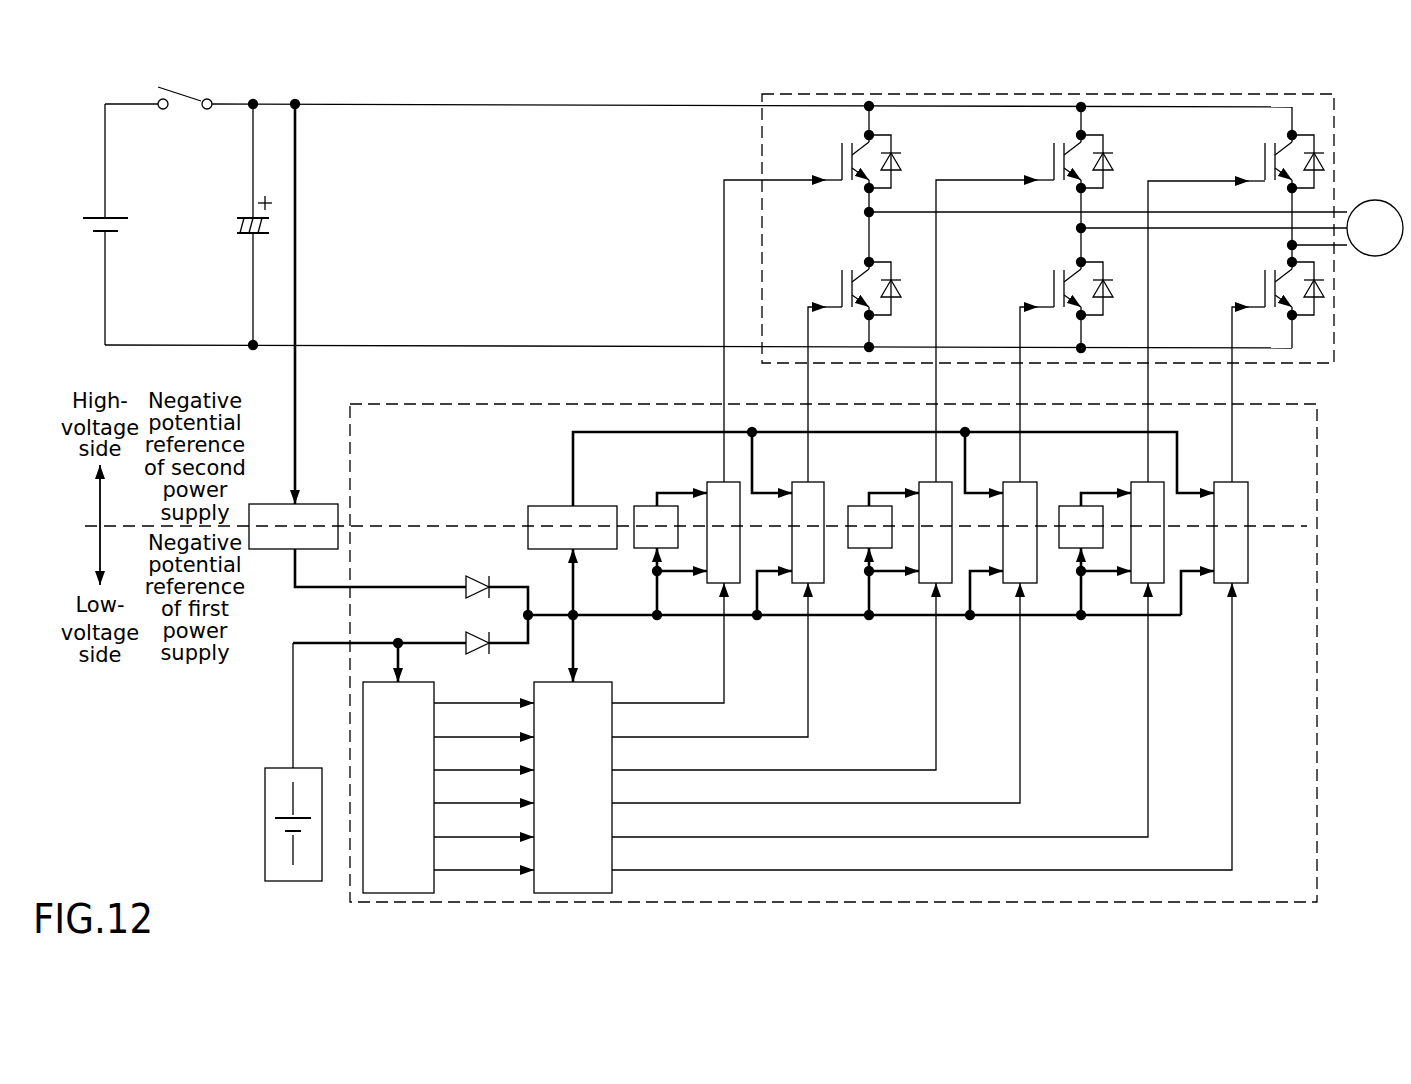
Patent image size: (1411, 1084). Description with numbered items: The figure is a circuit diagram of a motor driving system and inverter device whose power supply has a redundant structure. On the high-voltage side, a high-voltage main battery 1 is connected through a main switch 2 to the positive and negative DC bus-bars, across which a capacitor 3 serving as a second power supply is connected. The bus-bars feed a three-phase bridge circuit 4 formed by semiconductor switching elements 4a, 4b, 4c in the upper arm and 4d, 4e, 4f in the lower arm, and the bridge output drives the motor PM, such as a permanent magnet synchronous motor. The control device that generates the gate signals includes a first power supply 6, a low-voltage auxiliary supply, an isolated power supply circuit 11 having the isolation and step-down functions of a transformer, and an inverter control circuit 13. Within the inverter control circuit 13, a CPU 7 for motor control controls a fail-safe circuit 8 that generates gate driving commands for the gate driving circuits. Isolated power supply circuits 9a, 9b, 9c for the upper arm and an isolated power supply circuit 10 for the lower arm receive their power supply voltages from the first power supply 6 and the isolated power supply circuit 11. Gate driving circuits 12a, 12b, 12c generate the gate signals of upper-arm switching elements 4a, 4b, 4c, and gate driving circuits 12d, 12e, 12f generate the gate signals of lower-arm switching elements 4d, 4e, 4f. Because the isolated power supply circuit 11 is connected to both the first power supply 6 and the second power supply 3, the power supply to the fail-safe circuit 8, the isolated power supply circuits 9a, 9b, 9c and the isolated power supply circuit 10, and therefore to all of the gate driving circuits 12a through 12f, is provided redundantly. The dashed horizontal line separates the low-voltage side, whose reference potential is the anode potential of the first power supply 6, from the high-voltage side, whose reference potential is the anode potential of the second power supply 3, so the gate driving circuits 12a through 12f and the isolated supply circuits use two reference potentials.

The high-voltage main battery 1 is at (117, 208).
The main switch 2 is at (180, 83).
The capacitor (second power supply) 3 is at (233, 227).
The three-phase bridge circuit 4 is at (1334, 318).
The semiconductor switching element 4a is at (832, 158).
The semiconductor switching element 4b is at (1044, 158).
The semiconductor switching element 4c is at (1254, 158).
The semiconductor switching element 4d is at (834, 286).
The semiconductor switching element 4e is at (1044, 286).
The semiconductor switching element 4f is at (1254, 286).
The first power supply 6 is at (268, 797).
The CPU 7 is at (395, 880).
The fail-safe circuit 8 is at (575, 880).
The isolated power supply circuit for upper arm 9a is at (641, 509).
The isolated power supply circuit for upper arm 9b is at (861, 508).
The isolated power supply circuit for upper arm 9c is at (1066, 509).
The isolated power supply circuit for lower arm 10 is at (547, 508).
The isolated power supply circuit 11 is at (272, 545).
The gate driving circuit 12a is at (710, 488).
The gate driving circuit 12b is at (927, 488).
The gate driving circuit 12c is at (1135, 488).
The gate driving circuit 12d is at (817, 555).
The gate driving circuit 12e is at (1026, 555).
The gate driving circuit 12f is at (1243, 565).
The inverter control circuit 13 is at (1163, 903).